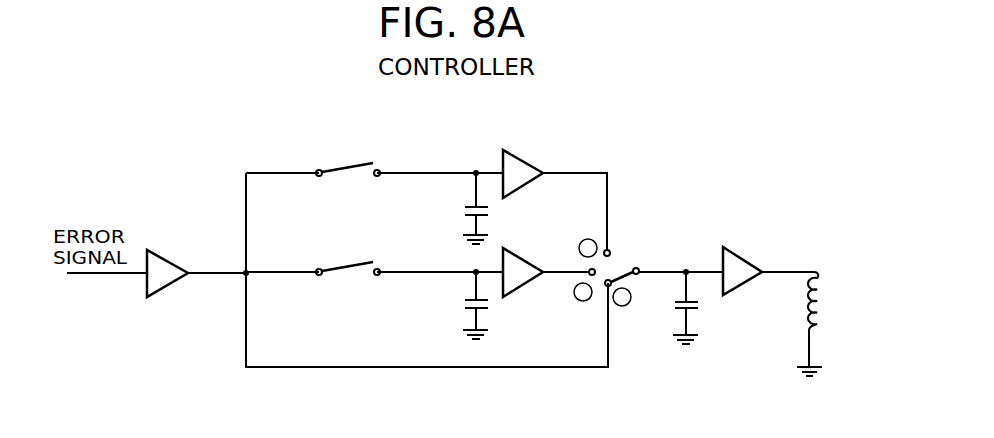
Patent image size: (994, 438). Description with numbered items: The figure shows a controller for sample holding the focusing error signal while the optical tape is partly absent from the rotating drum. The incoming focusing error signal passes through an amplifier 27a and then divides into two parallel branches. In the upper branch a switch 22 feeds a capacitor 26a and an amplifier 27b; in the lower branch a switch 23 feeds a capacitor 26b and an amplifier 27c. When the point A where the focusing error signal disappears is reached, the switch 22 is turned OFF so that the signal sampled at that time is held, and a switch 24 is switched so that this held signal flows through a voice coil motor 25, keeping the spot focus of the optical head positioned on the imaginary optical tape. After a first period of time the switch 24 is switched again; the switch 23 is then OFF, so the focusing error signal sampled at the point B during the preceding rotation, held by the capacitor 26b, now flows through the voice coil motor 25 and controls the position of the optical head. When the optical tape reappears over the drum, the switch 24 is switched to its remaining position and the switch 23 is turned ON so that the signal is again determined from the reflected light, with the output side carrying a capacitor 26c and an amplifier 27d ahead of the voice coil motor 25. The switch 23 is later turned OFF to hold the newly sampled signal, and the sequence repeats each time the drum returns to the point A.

The switch 22 is at (367, 162).
The switch 23 is at (367, 261).
The switch 24 is at (623, 267).
The voice coil motor 25 is at (820, 293).
The capacitor 26a is at (489, 209).
The capacitor 26b is at (489, 303).
The capacitor 26c is at (699, 306).
The amplifier 27a is at (167, 292).
The amplifier 27b is at (528, 162).
The amplifier 27c is at (532, 280).
The amplifier 27d is at (750, 258).